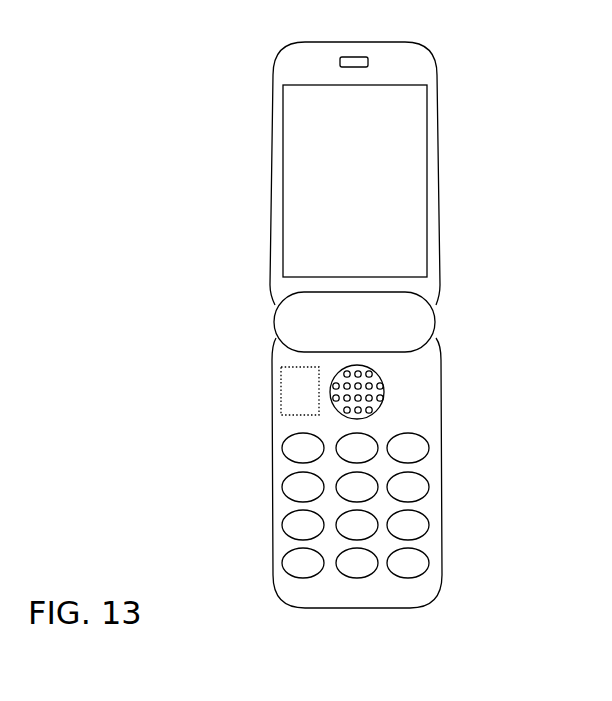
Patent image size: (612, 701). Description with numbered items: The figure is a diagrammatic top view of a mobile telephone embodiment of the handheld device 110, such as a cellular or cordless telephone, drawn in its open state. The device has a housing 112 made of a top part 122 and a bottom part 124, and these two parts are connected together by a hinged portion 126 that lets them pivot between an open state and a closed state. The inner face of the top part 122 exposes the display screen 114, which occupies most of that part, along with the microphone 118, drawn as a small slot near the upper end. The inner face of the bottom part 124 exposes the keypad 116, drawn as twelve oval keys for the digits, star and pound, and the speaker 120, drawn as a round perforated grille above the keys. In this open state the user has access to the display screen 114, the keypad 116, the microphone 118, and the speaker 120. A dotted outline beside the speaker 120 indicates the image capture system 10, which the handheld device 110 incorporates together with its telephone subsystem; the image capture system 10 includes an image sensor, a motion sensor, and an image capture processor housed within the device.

The image capture system 10 is at (300, 390).
The handheld device 110 is at (143, 92).
The housing 112 is at (486, 118).
The display screen 114 is at (376, 189).
The keypad 116 is at (442, 471).
The microphone 118 is at (353, 57).
The speaker 120 is at (382, 376).
The top part 122 is at (271, 184).
The bottom part 124 is at (272, 458).
The hinged portion 126 is at (277, 323).